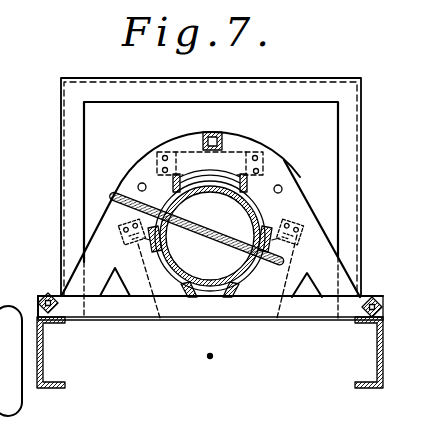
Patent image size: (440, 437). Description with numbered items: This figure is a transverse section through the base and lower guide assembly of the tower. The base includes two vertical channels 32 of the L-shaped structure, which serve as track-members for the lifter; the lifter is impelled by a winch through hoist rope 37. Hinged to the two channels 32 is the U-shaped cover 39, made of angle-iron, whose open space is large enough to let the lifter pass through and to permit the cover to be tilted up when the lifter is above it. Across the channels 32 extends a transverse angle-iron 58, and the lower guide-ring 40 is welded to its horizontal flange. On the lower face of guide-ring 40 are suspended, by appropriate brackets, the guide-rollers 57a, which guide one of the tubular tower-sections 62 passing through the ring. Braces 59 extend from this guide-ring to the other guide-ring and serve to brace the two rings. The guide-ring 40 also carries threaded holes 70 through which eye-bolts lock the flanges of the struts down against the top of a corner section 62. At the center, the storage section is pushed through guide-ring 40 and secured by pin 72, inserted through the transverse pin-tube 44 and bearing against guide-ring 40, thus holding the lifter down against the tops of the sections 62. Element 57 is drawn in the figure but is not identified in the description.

The vertical channels 32 is at (45, 388).
The hoist rope 37 is at (54, 293).
The U-shaped cover 39 is at (345, 90).
The lower guide-ring 40 is at (246, 141).
The transverse tube 44 is at (226, 230).
The struts 57 is at (270, 166).
The guide-rollers 57a is at (288, 205).
The transverse angle-iron 58 is at (116, 303).
The braces 59 is at (223, 135).
The tower-sections 62 is at (213, 288).
The threaded hole 70 is at (143, 183).
The pin 72 is at (116, 188).